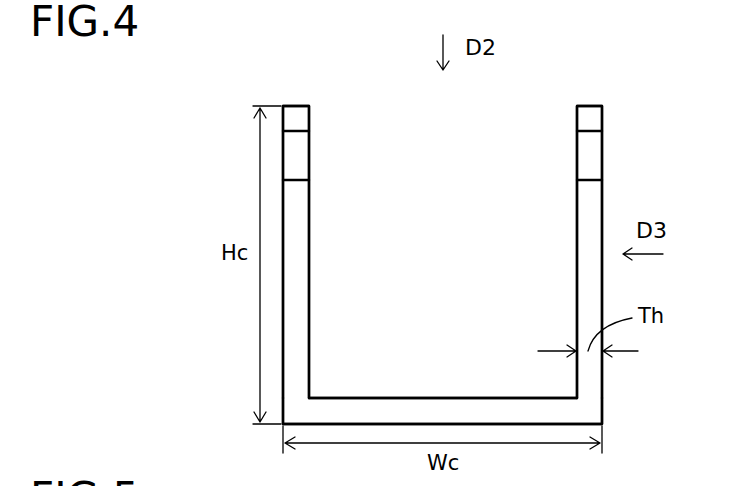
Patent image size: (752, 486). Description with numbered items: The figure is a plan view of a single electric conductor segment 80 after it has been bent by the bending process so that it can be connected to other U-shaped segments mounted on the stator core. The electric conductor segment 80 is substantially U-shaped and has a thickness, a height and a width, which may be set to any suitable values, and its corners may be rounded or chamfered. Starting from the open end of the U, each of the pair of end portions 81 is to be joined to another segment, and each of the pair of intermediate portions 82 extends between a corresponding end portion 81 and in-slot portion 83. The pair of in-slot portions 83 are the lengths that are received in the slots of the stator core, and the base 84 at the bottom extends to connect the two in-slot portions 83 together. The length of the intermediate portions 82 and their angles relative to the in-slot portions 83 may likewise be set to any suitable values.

The electric conductor segment 80 is at (247, 129).
The end portion 81 is at (298, 118).
The intermediate portion 82 is at (298, 160).
The in-slot portion 83 is at (297, 270).
The base 84 is at (405, 408).